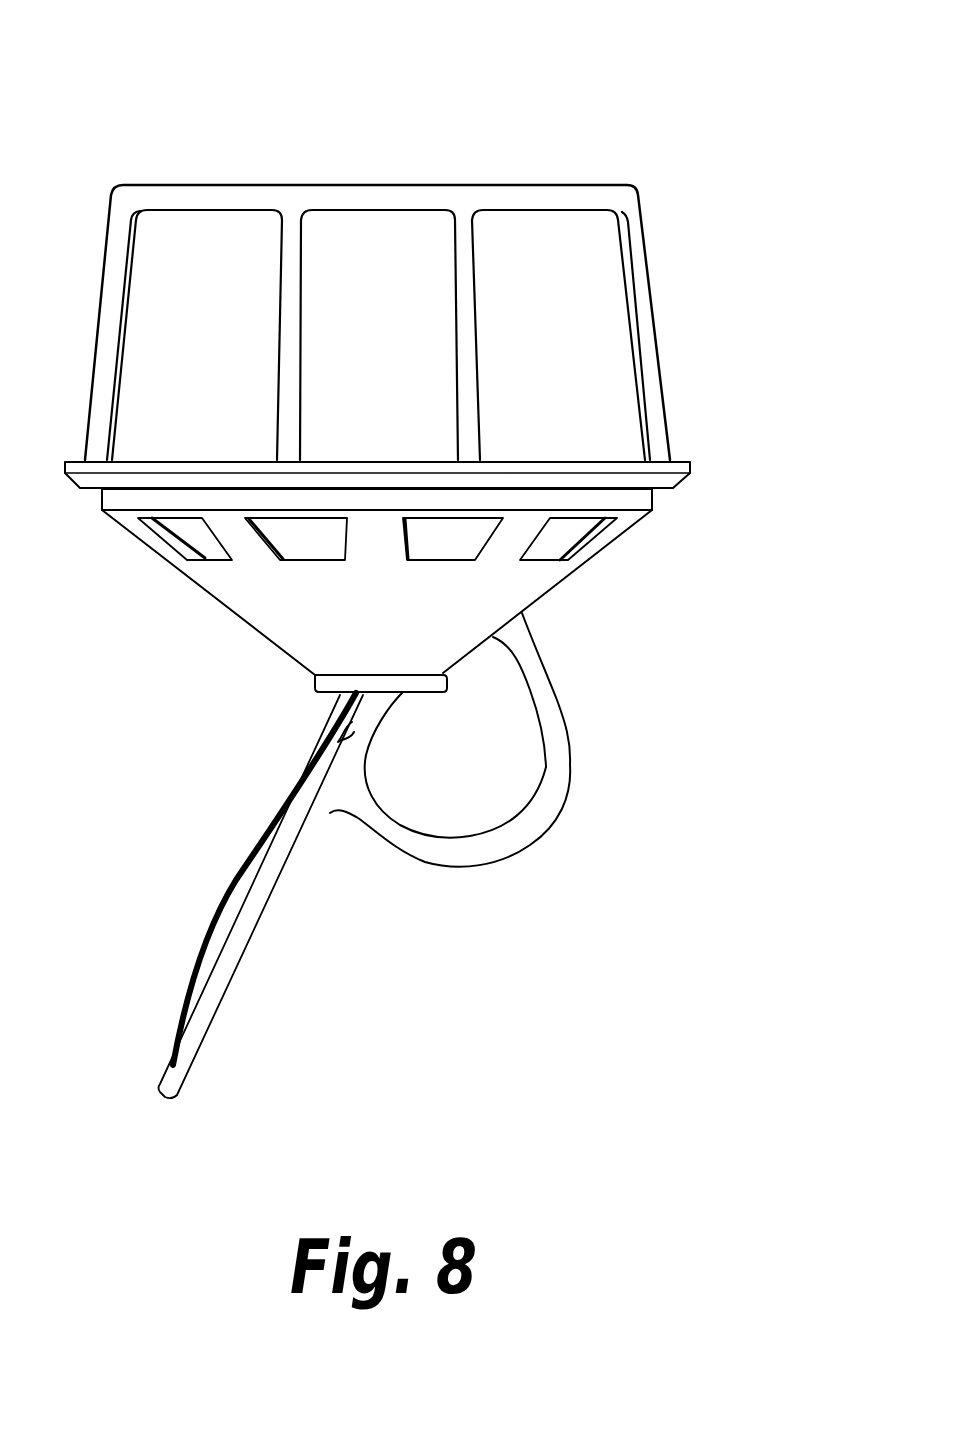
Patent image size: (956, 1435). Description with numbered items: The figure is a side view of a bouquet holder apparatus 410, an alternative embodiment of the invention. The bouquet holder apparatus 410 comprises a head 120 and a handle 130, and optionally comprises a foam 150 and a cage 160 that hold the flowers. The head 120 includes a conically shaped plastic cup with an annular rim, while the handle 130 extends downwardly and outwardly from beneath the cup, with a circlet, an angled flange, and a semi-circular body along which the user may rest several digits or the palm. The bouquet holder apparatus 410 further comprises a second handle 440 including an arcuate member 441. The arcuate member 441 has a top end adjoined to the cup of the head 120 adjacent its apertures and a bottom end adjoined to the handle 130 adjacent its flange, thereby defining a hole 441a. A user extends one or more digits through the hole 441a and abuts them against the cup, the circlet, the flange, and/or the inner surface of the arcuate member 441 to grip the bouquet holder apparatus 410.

The bouquet holder apparatus 410 is at (655, 82).
The cage 160 is at (647, 238).
The foam 150 is at (612, 337).
The head 120 is at (168, 632).
The handle 130 is at (208, 902).
The handle 440 is at (632, 780).
The arcuate member 441 is at (535, 830).
The hole 441a is at (507, 697).